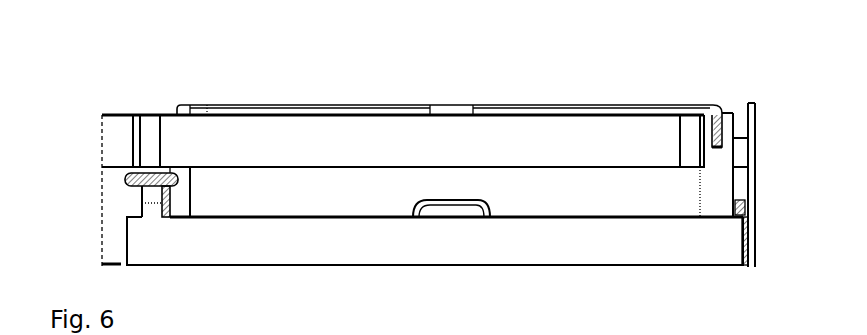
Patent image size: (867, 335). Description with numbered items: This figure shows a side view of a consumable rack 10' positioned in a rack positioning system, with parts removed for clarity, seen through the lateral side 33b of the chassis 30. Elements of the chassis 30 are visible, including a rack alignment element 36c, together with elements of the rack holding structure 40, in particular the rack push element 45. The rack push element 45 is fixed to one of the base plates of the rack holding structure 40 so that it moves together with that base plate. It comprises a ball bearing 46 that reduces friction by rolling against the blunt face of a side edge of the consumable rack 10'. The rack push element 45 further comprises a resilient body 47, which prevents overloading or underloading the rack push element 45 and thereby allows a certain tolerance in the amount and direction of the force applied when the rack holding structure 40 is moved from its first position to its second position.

The consumable rack 10' is at (449, 87).
The chassis 30 is at (174, 136).
The lateral side 33b is at (603, 173).
The rack alignment element 36c is at (737, 112).
The rack holding structure 40 is at (323, 245).
The rack push element 45 is at (137, 193).
The ball bearing 46 is at (125, 180).
The resilient body 47 is at (140, 204).